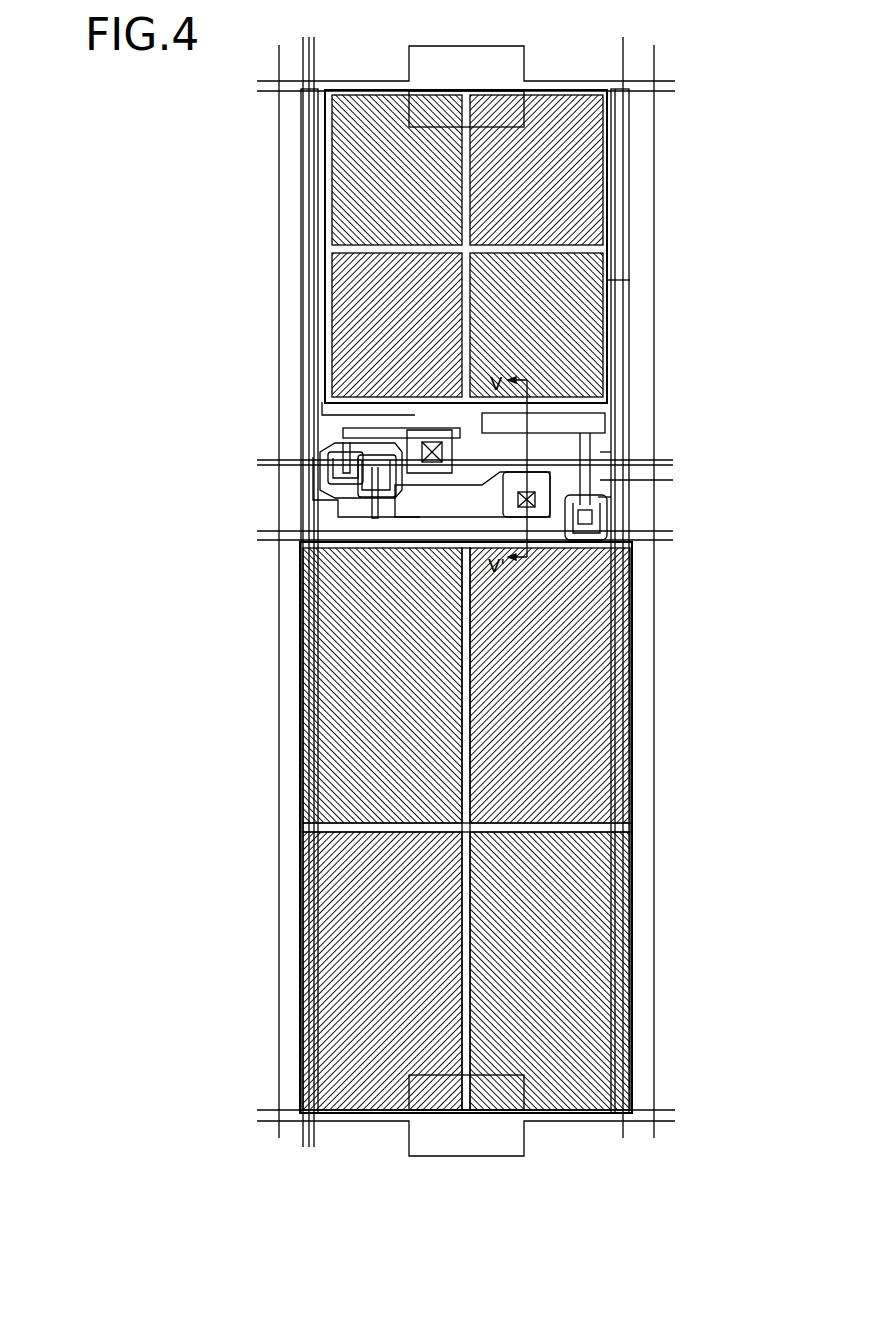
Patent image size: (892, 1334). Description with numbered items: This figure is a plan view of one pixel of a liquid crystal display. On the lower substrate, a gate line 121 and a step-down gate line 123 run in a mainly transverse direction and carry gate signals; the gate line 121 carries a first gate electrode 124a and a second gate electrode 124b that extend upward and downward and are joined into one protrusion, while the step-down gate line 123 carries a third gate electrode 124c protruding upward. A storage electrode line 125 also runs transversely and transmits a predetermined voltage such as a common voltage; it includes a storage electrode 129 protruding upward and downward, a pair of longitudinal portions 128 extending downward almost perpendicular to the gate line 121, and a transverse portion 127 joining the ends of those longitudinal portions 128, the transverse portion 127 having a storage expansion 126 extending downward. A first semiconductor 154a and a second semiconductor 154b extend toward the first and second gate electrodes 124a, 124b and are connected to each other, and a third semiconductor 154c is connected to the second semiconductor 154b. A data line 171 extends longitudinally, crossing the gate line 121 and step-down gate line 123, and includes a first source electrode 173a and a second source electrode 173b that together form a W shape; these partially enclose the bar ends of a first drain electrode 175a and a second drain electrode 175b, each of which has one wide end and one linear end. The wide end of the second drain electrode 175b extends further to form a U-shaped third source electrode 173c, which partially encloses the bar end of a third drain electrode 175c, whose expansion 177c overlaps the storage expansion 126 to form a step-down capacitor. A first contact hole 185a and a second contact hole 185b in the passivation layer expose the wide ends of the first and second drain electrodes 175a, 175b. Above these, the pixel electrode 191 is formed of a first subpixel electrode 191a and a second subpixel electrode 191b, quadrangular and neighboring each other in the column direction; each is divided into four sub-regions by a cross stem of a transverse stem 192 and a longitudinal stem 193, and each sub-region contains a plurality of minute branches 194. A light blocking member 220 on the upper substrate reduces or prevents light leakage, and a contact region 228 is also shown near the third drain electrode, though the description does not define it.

The gate line 121 is at (660, 462).
The step-down gate line 123 is at (673, 540).
The first gate electrode 124a is at (303, 523).
The second gate electrode 124b is at (400, 432).
The third gate electrode 124c is at (600, 507).
The storage electrode line 125 is at (567, 88).
The storage expansion 126 is at (600, 452).
The transverse portion 127 is at (322, 420).
The longitudinal portions 128 is at (612, 290).
The storage electrode 129 is at (524, 110).
The first semiconductor 154a is at (303, 467).
The second semiconductor 154b is at (360, 500).
The third semiconductor 154c is at (590, 555).
The data line 171 is at (314, 63).
The first source electrode 173a is at (303, 497).
The second source electrode 173b is at (385, 457).
The third source electrode 173c is at (610, 542).
The first drain electrode 175a is at (330, 450).
The second drain electrode 175b is at (395, 492).
The third drain electrode 175c is at (602, 490).
The expansion 177c is at (605, 430).
The first contact hole 185a is at (425, 470).
The second contact hole 185b is at (595, 565).
The pixel electrode 191 is at (157, 160).
The first subpixel electrode 191a is at (478, 423).
The second subpixel electrode 191b is at (413, 827).
The transverse stem 192 is at (330, 828).
The longitudinal stem 193 is at (466, 885).
The minute branches 194 is at (583, 178).
The light blocking member 220 is at (622, 147).
The contact hole 228 is at (600, 497).